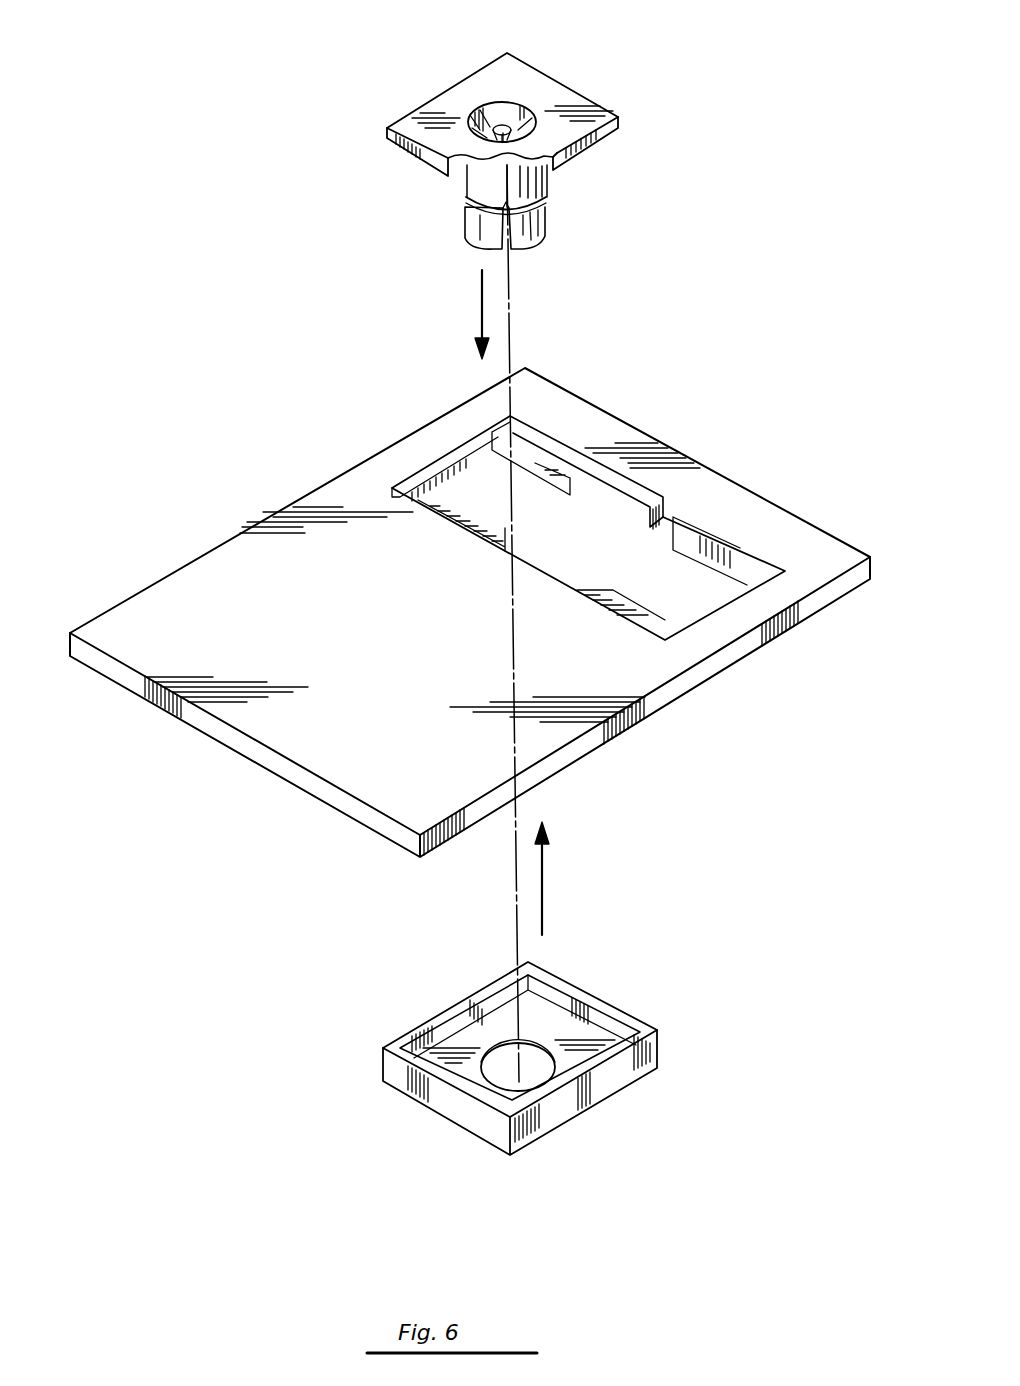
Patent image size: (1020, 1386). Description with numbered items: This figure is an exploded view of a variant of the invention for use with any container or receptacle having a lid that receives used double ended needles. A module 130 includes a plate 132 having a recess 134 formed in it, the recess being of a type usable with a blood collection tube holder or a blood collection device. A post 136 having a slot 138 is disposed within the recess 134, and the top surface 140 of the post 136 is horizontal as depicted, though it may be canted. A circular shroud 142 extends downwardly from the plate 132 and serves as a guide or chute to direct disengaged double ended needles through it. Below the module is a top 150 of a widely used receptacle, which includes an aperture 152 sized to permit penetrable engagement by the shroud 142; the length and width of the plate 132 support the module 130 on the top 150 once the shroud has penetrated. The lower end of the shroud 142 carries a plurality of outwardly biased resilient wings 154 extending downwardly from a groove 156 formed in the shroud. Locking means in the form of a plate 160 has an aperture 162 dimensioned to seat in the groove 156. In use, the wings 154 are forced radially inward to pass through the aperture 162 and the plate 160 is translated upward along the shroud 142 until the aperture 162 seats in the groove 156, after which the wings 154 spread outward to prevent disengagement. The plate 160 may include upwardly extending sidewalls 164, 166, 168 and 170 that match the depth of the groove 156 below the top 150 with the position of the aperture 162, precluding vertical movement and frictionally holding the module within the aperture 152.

The module 130 is at (458, 260).
The plate 132 is at (588, 147).
The recess 134 is at (523, 115).
The post 136 is at (480, 110).
The slot 138 is at (503, 100).
The top surface 140 is at (423, 162).
The circular shroud 142 is at (483, 178).
The resilient wings 154 is at (472, 223).
The groove 156 is at (538, 198).
The top 150 is at (615, 668).
The aperture 152 is at (660, 497).
The plate 160 is at (500, 1027).
The aperture 162 is at (443, 1112).
The sidewall 164 is at (600, 1002).
The sidewall 166 is at (425, 1023).
The sidewall 168 is at (485, 1113).
The sidewall 170 is at (585, 1077).